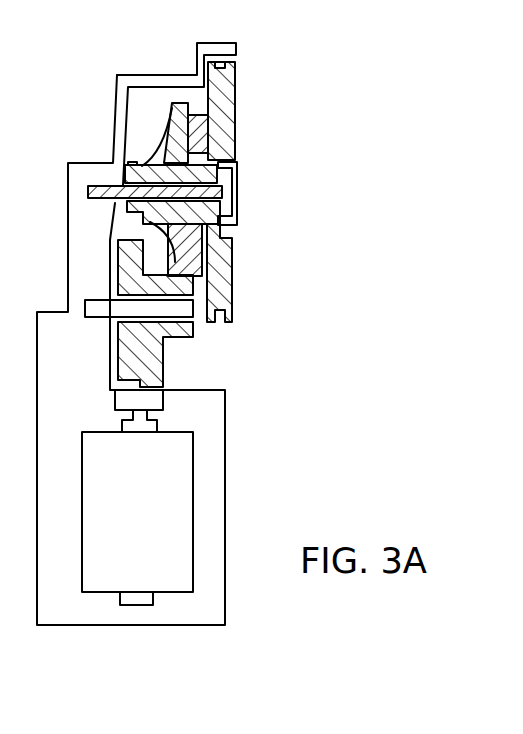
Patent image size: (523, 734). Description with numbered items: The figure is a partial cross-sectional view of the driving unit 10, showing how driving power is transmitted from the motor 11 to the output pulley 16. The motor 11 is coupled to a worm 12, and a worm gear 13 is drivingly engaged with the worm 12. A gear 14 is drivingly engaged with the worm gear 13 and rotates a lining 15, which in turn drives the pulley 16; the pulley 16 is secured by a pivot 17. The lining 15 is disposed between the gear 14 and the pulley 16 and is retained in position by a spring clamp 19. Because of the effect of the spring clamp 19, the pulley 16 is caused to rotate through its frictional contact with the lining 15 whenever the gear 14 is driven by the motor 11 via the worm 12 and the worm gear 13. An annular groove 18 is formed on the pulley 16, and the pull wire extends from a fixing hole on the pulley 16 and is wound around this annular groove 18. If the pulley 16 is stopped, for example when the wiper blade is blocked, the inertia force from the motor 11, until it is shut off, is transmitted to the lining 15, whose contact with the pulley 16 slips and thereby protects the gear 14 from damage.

The driving unit 10 is at (240, 267).
The motor 11 is at (177, 523).
The worm 12 is at (162, 362).
The worm gear 13 is at (114, 243).
The gear 14 is at (190, 118).
The lining 15 is at (212, 155).
The pulley 16 is at (217, 308).
The pivot 17 is at (237, 208).
The annular groove 18 is at (224, 63).
The spring clamp 19 is at (166, 141).